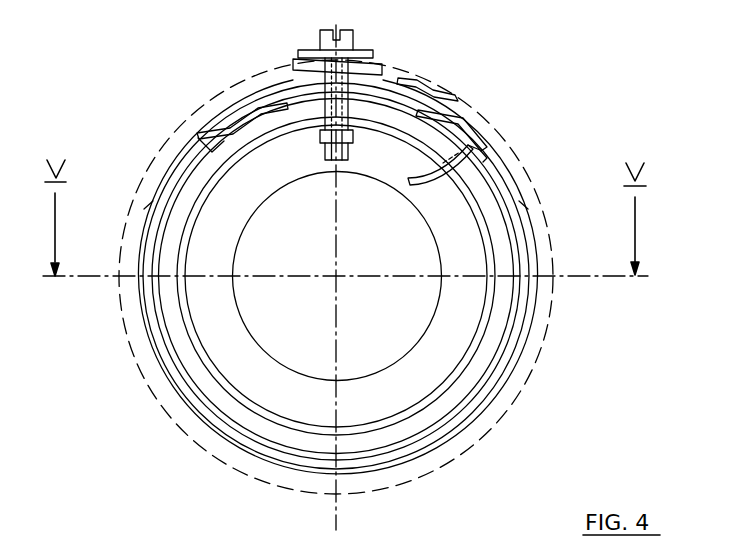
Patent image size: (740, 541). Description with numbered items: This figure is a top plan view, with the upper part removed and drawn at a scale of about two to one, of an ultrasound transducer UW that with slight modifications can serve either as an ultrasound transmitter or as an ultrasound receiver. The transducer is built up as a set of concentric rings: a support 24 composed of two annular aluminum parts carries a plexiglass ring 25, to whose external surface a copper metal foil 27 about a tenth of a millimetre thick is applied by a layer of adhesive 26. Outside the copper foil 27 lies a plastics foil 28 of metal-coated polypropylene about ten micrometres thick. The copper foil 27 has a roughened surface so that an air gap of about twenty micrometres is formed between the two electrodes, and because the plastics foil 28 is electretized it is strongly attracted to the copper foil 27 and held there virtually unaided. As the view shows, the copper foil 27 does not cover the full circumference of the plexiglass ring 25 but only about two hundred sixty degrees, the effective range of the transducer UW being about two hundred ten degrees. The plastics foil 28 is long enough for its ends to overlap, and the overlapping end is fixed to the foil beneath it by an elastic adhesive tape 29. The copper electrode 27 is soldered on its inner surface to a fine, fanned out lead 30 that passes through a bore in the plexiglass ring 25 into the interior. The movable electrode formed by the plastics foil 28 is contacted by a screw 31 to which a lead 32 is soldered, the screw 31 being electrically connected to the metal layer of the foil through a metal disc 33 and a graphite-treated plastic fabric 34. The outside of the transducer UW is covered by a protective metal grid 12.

The protective metal grid 12 is at (550, 240).
The support 24 is at (485, 235).
The plexiglass ring 25 is at (170, 253).
The layer of adhesive 26 is at (497, 365).
The metal foil 27 is at (163, 357).
The plastics foil 28 is at (145, 230).
The elastic adhesive tape 29 is at (420, 77).
The lead 30 is at (418, 185).
The screw 31 is at (327, 32).
The lead 32 is at (328, 175).
The metal disc 33 is at (360, 53).
The graphite-treated plastic fabric 34 is at (300, 62).
The ultrasound transducer UW is at (178, 106).